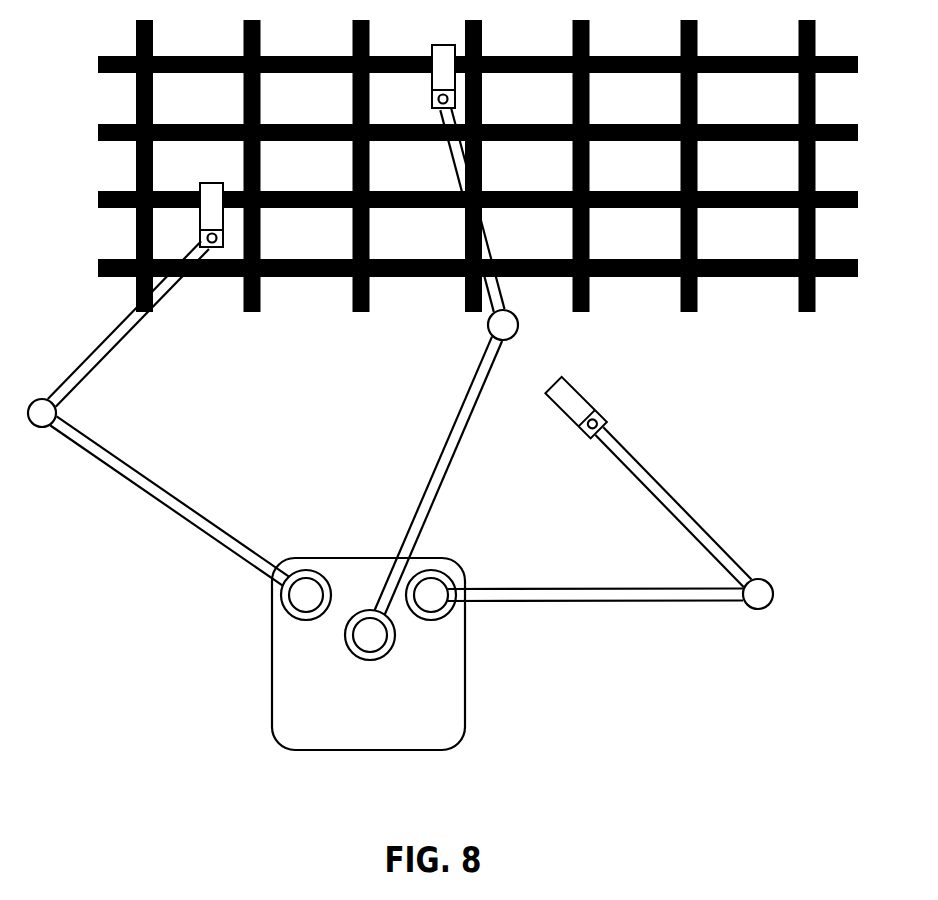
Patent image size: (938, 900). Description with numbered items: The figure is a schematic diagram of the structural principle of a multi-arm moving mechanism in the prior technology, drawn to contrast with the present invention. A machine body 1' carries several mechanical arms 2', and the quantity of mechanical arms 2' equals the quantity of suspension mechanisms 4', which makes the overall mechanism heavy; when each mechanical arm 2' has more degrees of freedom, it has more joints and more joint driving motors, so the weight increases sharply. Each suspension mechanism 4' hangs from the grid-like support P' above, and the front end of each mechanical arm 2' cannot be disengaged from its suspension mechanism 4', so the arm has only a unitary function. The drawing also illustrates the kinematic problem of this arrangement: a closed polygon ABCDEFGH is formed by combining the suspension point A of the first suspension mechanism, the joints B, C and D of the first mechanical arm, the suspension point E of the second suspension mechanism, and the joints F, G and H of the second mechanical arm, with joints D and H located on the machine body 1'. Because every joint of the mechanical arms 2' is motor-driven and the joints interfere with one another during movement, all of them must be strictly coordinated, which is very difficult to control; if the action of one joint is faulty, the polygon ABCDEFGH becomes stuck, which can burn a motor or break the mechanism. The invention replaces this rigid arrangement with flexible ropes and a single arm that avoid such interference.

The suspension point of the first suspension mechanism A is at (211, 203).
The joint of the first mechanical arm B is at (225, 237).
The joint of the first mechanical arm C is at (42, 401).
The joint of the first mechanical arm D is at (306, 576).
The suspension point of the second suspension mechanism E is at (443, 61).
The joint of the second mechanical arm F is at (431, 101).
The joint of the second mechanical arm G is at (516, 325).
The joint of the second mechanical arm H is at (370, 622).
The machine body 1' is at (332, 654).
The mechanical arm 2' is at (595, 639).
The suspension mechanism 4' is at (587, 388).
The grid panel P' is at (478, 194).